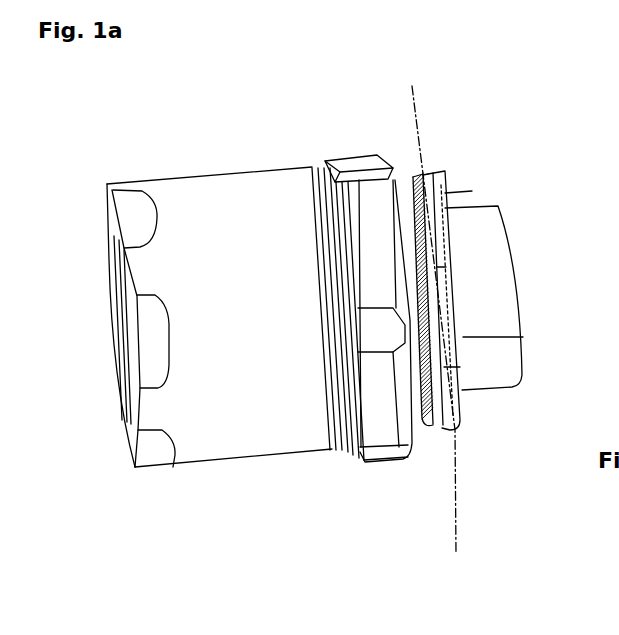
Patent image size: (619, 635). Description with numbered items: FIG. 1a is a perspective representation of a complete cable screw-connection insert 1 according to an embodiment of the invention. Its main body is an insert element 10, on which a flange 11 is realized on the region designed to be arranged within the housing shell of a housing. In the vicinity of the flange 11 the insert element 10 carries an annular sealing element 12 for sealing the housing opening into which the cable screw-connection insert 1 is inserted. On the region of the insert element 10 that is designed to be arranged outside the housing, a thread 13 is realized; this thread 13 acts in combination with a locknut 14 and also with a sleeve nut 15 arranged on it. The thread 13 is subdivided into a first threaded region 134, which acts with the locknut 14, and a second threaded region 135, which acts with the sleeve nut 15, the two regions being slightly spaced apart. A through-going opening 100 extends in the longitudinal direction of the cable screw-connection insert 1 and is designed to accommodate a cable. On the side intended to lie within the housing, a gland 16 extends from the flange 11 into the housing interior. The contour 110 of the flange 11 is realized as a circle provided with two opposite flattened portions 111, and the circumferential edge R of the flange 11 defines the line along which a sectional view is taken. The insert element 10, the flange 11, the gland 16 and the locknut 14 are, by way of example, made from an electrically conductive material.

The cable screw-connection insert 1 is at (153, 118).
The sleeve nut 15 is at (150, 181).
The through-going opening 100 is at (120, 343).
The thread 13 is at (289, 390).
The second threaded region 135 is at (333, 450).
The first threaded region 134 is at (346, 448).
The locknut 14 is at (335, 158).
The annular sealing element 12 is at (436, 448).
The insert element 10 is at (460, 273).
The flange 11 is at (447, 191).
The contour of the flange 110 is at (433, 176).
The flattened portions 111 is at (525, 335).
The gland 16 is at (498, 206).
The circumferential edge of the flange R is at (433, 327).